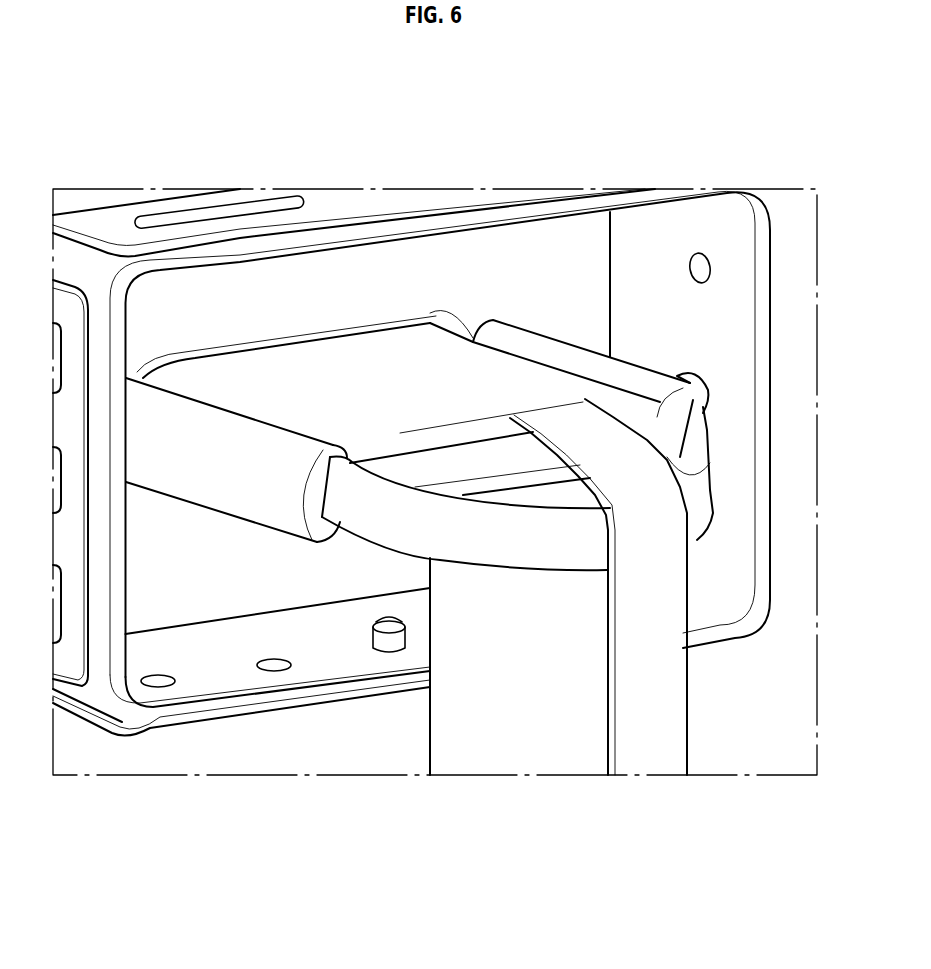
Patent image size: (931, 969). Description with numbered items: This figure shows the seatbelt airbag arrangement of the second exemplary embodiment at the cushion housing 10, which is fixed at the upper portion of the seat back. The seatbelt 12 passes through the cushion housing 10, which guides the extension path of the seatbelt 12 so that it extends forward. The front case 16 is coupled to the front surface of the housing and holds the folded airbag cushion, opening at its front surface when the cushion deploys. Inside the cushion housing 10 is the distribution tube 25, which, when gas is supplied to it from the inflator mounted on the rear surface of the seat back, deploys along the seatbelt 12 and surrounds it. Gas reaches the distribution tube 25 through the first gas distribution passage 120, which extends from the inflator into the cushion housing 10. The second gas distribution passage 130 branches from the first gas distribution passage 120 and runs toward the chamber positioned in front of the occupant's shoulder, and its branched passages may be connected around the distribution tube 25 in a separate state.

The cushion housing 10 is at (220, 196).
The seatbelt 12 is at (492, 780).
The front case 16 is at (463, 273).
The distribution tube 25 is at (307, 368).
The first gas distribution passage 120 is at (652, 738).
The second gas distribution passage 130 is at (537, 350).